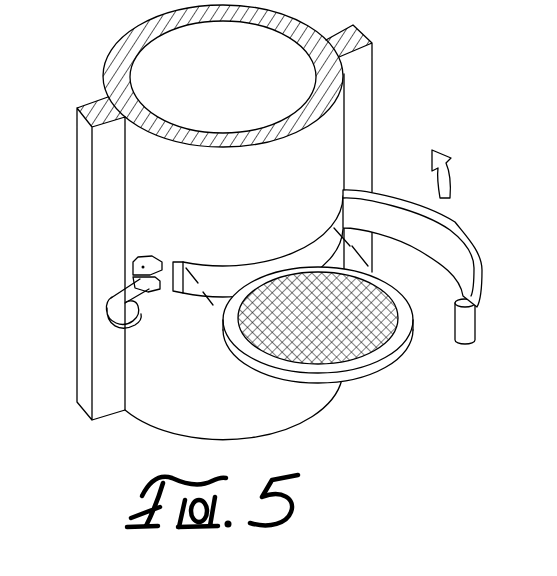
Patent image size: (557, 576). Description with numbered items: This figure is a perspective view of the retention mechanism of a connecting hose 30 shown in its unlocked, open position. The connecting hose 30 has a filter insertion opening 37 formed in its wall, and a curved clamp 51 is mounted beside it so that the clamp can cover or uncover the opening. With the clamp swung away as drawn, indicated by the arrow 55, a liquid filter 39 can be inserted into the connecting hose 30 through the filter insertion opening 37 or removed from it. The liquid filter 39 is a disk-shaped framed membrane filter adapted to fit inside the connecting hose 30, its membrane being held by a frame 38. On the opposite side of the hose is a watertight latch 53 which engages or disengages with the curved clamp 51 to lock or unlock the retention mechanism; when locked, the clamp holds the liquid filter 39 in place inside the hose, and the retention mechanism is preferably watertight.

The connecting hose 30 is at (414, 53).
The filter insertion opening 37 is at (230, 262).
The frame 38 is at (362, 373).
The liquid filter 39 is at (358, 328).
The curved clamp 51 is at (412, 193).
The watertight latch 53 is at (110, 297).
The pivot direction arrow 55 is at (455, 178).